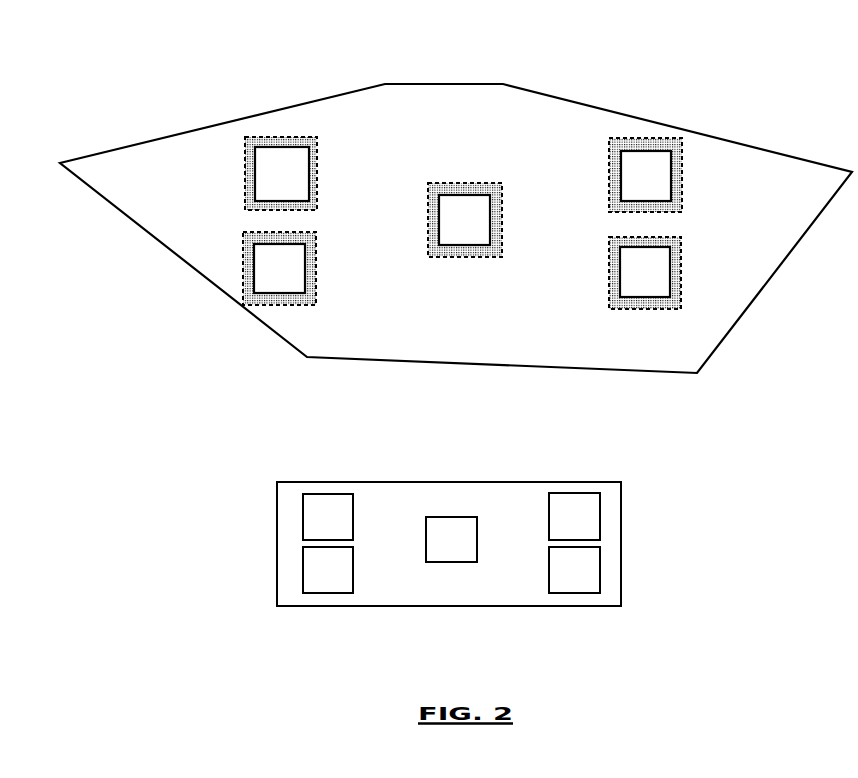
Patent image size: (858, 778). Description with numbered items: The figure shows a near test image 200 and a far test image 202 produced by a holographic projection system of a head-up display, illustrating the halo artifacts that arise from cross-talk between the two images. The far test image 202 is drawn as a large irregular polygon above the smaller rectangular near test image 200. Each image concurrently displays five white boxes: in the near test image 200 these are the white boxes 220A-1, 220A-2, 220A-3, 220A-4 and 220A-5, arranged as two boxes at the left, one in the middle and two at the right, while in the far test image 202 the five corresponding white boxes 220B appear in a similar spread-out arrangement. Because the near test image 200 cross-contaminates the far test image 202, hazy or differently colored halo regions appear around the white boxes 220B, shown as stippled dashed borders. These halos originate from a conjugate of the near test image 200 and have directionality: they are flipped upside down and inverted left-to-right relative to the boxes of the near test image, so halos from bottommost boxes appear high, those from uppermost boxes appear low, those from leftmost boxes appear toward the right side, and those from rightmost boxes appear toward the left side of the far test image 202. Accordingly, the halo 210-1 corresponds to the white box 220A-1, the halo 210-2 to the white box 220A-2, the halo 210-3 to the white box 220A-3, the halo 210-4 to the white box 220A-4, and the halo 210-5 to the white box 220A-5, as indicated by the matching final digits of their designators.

The near test image 200 is at (269, 460).
The far test image 202 is at (154, 80).
The halo 210-1 is at (681, 240).
The halo 210-2 is at (444, 183).
The halo 210-3 is at (243, 280).
The halo 210-4 is at (621, 138).
The halo 210-5 is at (257, 137).
The white box 220A-1 is at (303, 517).
The white box 220A-2 is at (448, 517).
The white box 220A-3 is at (600, 518).
The white box 220A-4 is at (303, 568).
The white box 220A-5 is at (600, 567).
The white boxes 220B is at (280, 147).